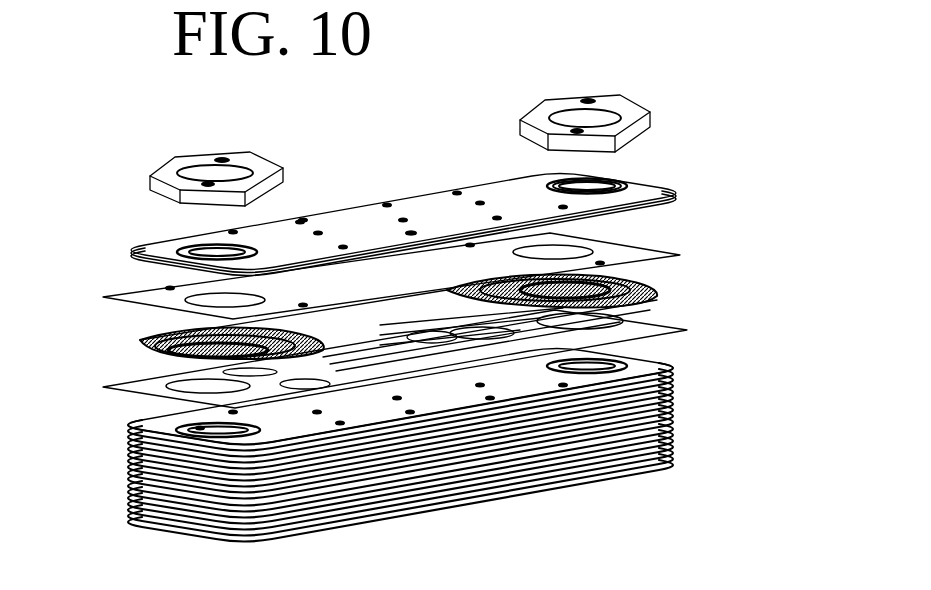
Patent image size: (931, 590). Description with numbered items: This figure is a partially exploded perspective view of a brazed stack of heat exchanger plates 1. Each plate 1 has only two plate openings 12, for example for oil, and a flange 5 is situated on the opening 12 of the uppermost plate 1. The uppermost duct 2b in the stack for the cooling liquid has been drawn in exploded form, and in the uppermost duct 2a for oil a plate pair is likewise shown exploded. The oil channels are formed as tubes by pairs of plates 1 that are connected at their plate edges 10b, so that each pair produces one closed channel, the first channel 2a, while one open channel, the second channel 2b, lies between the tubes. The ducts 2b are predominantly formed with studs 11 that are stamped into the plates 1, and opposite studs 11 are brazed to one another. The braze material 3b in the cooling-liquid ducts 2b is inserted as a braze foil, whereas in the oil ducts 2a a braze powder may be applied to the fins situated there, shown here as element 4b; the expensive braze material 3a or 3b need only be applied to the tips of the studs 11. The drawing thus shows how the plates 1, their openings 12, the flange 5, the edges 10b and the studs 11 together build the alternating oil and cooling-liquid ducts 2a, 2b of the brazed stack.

The heat exchanger plate 1 is at (137, 282).
The duct for oil 2a is at (200, 246).
The duct for cooling liquid 2b is at (452, 365).
The braze material 3a is at (615, 172).
The braze material 3b is at (640, 258).
The brazing material plate 4b is at (650, 306).
The flange 5 is at (628, 110).
The plate edge 10b is at (648, 256).
The stud 11 is at (455, 190).
The plate opening 12 is at (585, 184).